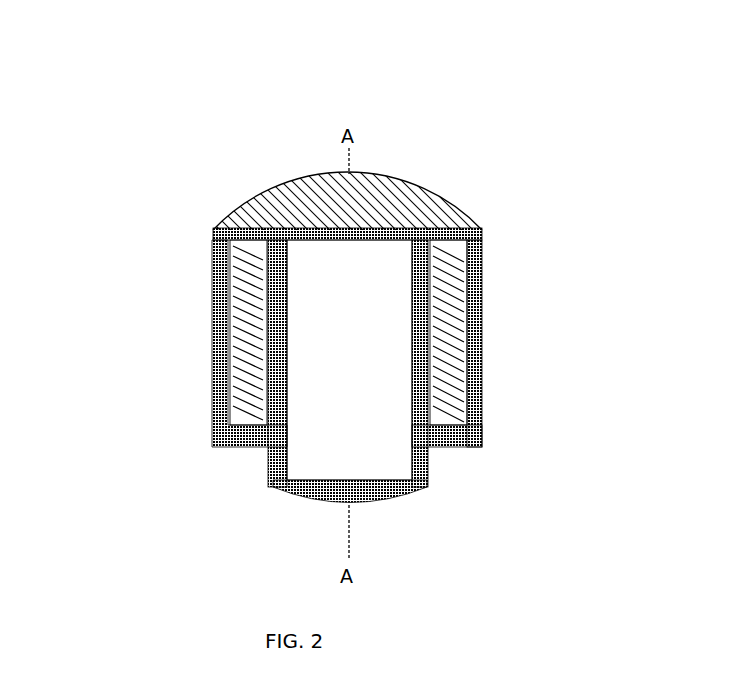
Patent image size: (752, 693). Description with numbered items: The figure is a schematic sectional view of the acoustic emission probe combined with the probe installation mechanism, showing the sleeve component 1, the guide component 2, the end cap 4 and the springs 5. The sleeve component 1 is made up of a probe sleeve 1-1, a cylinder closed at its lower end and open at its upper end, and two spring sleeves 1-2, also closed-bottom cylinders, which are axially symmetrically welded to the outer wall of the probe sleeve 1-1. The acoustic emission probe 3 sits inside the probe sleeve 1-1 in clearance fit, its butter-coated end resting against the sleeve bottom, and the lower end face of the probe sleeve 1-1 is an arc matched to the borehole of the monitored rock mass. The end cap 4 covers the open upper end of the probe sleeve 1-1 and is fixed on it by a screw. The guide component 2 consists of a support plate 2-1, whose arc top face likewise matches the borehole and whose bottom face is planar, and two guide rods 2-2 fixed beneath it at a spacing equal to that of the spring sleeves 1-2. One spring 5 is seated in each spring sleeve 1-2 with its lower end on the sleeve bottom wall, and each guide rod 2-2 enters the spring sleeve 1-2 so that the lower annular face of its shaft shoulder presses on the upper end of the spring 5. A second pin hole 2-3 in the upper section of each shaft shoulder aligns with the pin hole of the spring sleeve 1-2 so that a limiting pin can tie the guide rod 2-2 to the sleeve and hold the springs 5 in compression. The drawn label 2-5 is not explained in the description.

The sleeve component 1 is at (421, 452).
The probe sleeve 1-1 is at (357, 500).
The spring sleeve 1-2 is at (475, 300).
The guide component 2 is at (442, 212).
The support plate 2-1 is at (336, 207).
The guide rod 2-2 is at (242, 390).
The second pin hole 2-3 is at (246, 240).
The spring 2-5 is at (233, 252).
The acoustic emission probe 3 is at (303, 416).
The end cap 4 is at (289, 233).
The spring 5 is at (465, 355).